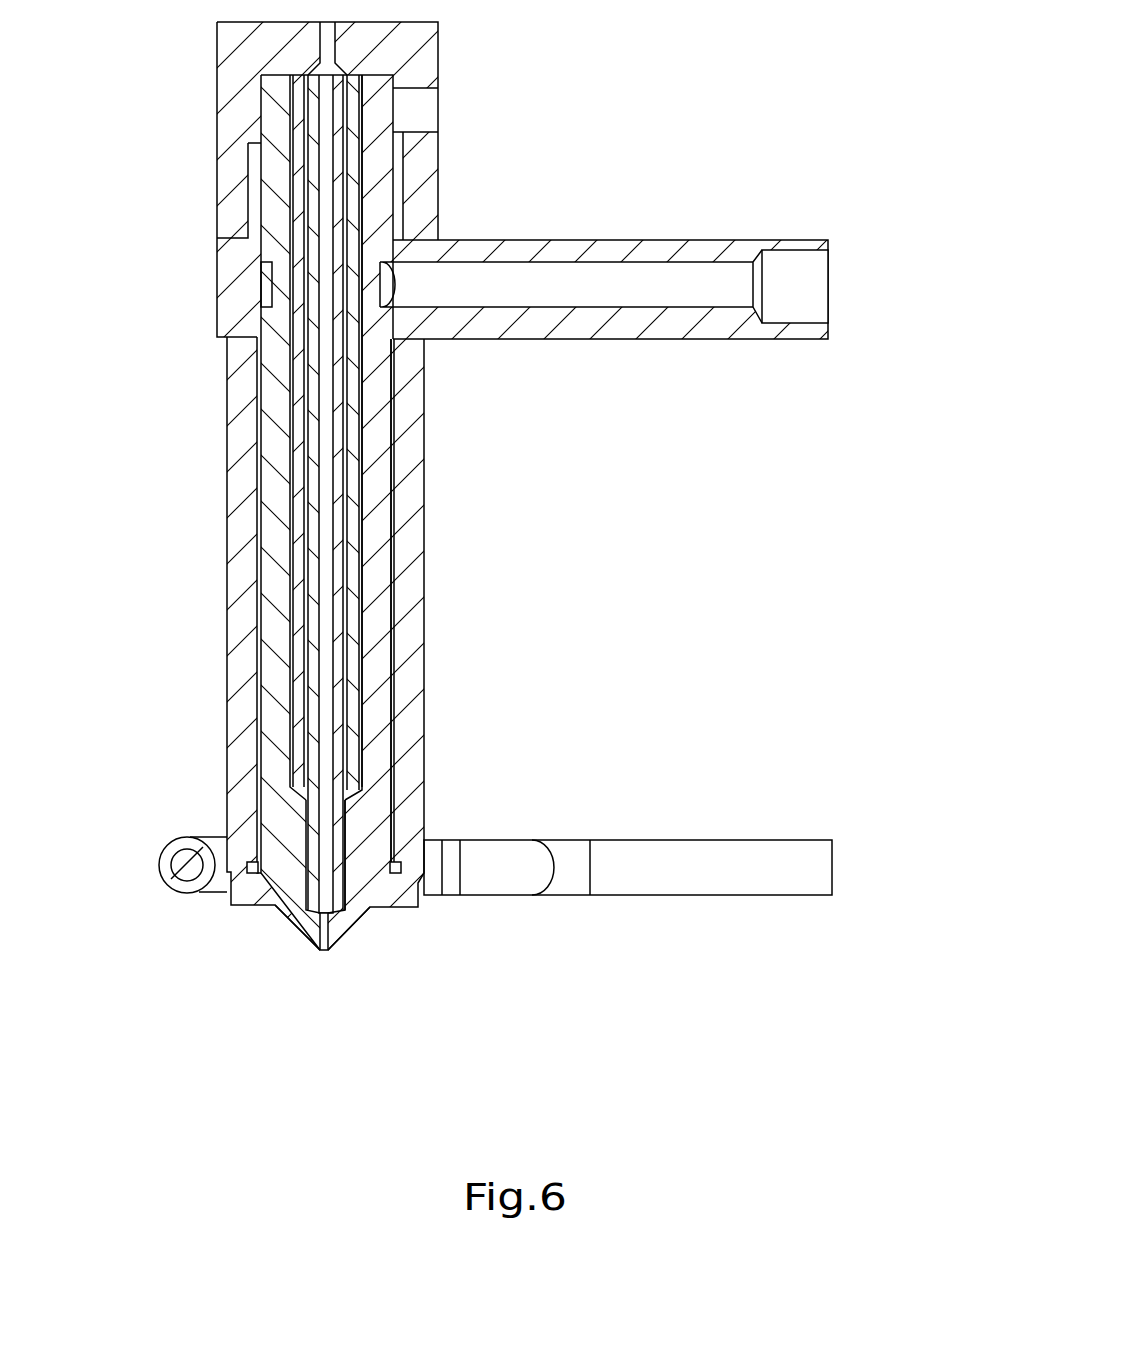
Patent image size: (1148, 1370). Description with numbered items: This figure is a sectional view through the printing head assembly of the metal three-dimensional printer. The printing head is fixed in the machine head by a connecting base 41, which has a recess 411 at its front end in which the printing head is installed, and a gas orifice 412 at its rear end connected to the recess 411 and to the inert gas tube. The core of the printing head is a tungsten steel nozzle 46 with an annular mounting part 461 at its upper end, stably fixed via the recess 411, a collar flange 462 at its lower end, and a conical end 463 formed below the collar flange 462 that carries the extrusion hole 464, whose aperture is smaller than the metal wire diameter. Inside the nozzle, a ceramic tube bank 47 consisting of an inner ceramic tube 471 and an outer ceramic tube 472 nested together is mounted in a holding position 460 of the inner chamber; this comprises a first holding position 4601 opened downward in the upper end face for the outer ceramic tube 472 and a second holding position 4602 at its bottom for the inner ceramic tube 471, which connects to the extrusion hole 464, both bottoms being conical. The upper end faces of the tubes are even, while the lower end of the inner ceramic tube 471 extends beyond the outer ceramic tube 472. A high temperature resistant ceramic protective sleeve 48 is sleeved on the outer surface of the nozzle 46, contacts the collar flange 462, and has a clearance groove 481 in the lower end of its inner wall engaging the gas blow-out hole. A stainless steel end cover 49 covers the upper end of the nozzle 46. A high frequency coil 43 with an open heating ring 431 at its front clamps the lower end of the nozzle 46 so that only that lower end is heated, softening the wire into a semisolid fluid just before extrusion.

The connecting base 41 is at (570, 240).
The recess 411 is at (272, 262).
The gas orifice 412 is at (775, 285).
The high frequency coil 43 is at (720, 840).
The open heating ring 431 is at (160, 865).
The tungsten steel nozzle 46 is at (375, 523).
The holding position 460 is at (568, 718).
The first holding position 4601 is at (362, 718).
The second holding position 4602 is at (342, 840).
The annular mounting part 461 is at (272, 290).
The collar flange 462 is at (407, 890).
The conical end 463 is at (347, 923).
The extrusion hole 464 is at (322, 950).
The ceramic tube bank 47 is at (557, 412).
The inner ceramic tube 471 is at (340, 428).
The outer ceramic tube 472 is at (353, 468).
The high temperature resistant ceramic protective sleeve 48 is at (230, 483).
The clearance groove 481 is at (255, 875).
The stainless steel end cover 49 is at (228, 98).